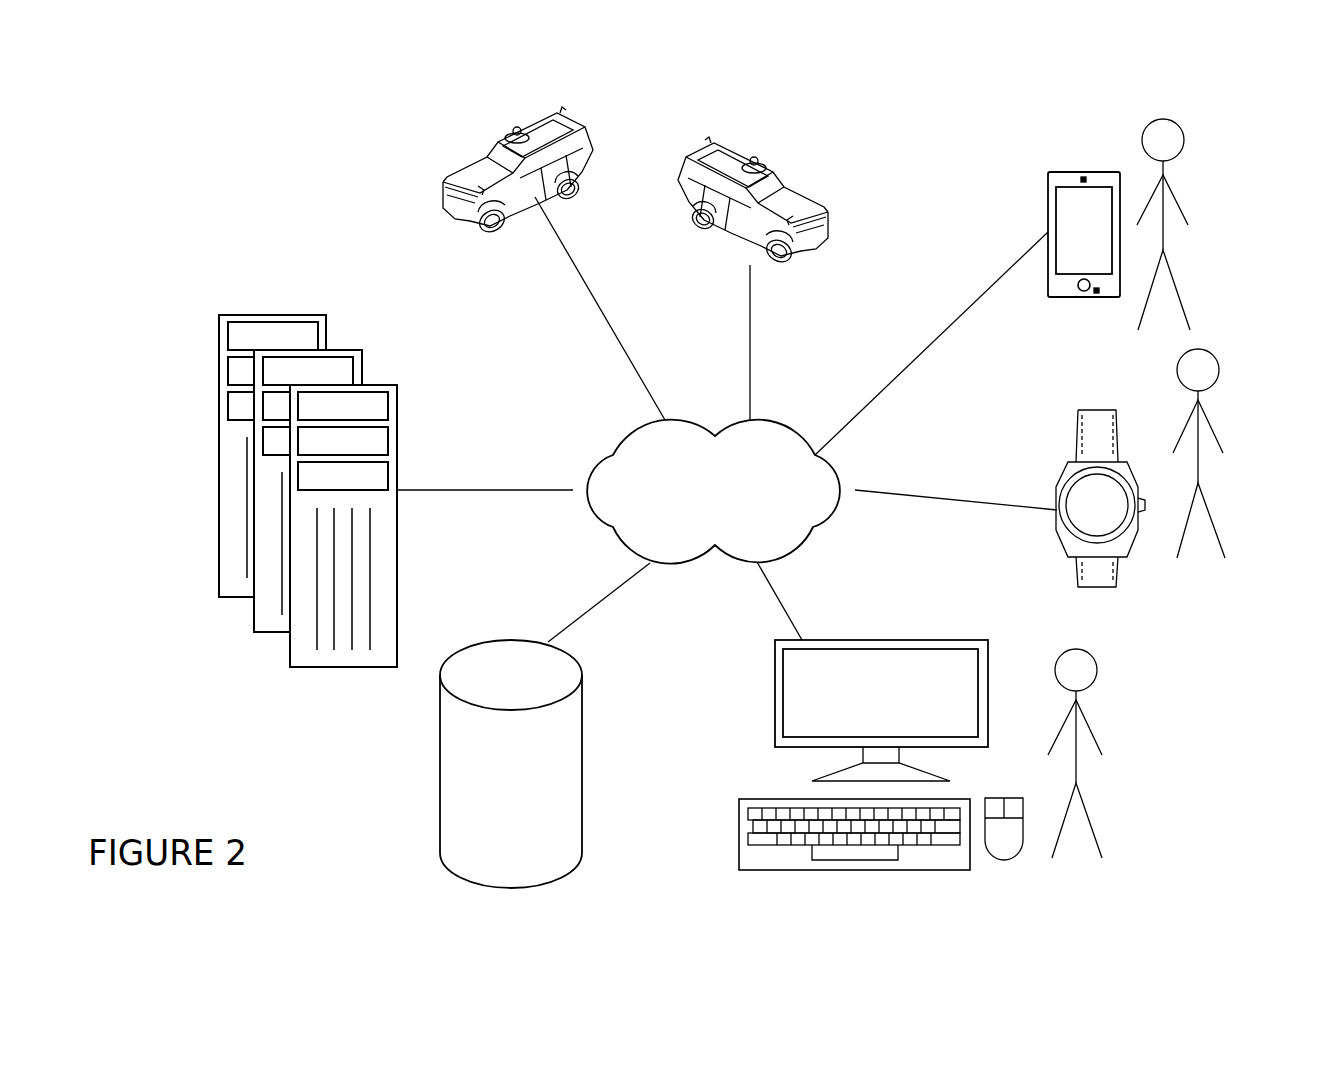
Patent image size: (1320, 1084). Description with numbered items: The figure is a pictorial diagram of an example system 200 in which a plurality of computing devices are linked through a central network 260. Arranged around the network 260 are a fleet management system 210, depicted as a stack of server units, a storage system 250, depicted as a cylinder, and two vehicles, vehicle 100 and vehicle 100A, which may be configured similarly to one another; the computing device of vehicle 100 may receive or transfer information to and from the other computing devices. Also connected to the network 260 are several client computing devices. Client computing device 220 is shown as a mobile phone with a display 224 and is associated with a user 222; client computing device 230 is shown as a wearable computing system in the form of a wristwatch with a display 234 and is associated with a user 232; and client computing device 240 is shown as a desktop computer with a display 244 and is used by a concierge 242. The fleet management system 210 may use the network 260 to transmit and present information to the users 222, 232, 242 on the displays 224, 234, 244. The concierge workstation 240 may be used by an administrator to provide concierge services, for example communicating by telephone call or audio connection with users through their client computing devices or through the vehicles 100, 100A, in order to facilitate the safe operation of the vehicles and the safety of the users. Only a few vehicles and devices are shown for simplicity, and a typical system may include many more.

The vehicle 100 is at (442, 185).
The vehicle 100A is at (827, 218).
The system 200 is at (245, 762).
The fleet management system 210 is at (398, 424).
The client computing device 220 is at (1048, 287).
The user 222 is at (1165, 238).
The display 224 is at (1048, 178).
The client computing device 230 is at (1059, 529).
The user 232 is at (1200, 465).
The display 234 is at (1140, 513).
The concierge workstation 240 is at (908, 718).
The concierge 242 is at (1077, 765).
The display 244 is at (978, 667).
The storage system 250 is at (583, 773).
The network 260 is at (578, 514).